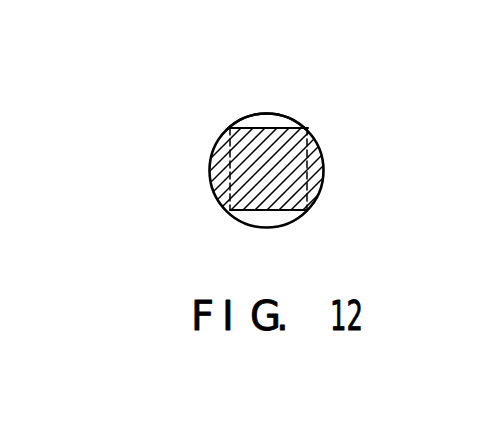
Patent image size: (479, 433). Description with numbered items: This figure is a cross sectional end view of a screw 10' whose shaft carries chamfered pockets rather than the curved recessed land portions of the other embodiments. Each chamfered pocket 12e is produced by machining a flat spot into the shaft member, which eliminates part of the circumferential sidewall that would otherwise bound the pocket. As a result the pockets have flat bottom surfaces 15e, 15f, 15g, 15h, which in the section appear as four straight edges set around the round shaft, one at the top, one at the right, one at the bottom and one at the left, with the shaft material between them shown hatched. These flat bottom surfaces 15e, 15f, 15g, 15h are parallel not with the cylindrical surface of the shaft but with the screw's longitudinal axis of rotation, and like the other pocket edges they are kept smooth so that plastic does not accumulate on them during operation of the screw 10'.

The screw 10' is at (317, 146).
The chamfered pocket 12e is at (282, 123).
The flat bottom surface 15e is at (263, 127).
The flat bottom surface 15f is at (322, 156).
The flat bottom surface 15g is at (277, 211).
The flat bottom surface 15h is at (210, 158).